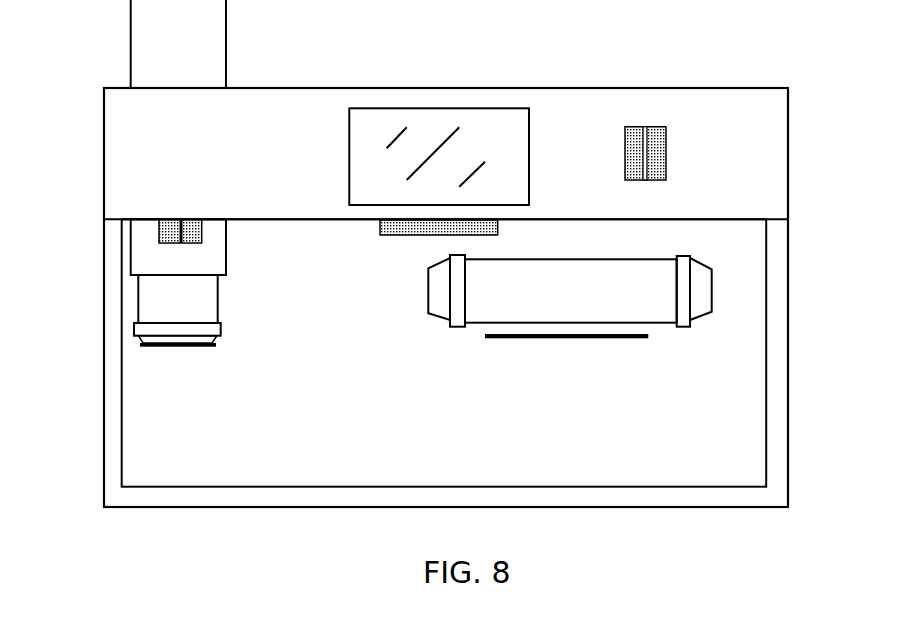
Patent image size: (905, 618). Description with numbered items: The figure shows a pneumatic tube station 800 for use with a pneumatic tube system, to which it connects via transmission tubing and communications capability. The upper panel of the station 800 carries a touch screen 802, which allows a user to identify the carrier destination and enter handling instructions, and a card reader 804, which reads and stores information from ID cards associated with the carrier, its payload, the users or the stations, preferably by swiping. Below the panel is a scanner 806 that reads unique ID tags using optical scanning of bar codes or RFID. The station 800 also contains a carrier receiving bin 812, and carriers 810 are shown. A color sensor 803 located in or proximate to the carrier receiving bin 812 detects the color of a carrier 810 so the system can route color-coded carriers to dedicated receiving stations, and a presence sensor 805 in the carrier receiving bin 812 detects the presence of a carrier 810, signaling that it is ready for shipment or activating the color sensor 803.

The station 800 is at (604, 88).
The touch screen 802 is at (387, 108).
The color sensor 803 is at (160, 235).
The card reader 804 is at (667, 147).
The presence sensor 805 is at (192, 220).
The scanner 806 is at (388, 236).
The carrier 810 is at (423, 325).
The carrier receiving bin 812 is at (128, 250).